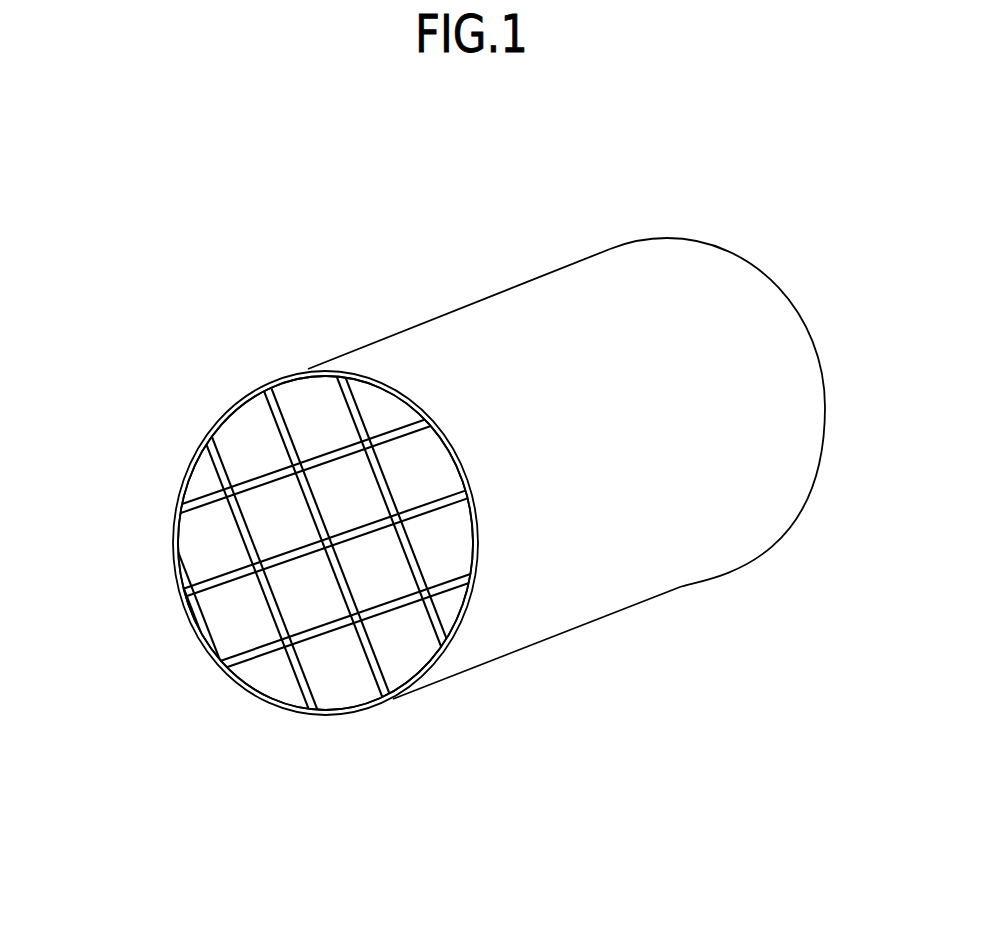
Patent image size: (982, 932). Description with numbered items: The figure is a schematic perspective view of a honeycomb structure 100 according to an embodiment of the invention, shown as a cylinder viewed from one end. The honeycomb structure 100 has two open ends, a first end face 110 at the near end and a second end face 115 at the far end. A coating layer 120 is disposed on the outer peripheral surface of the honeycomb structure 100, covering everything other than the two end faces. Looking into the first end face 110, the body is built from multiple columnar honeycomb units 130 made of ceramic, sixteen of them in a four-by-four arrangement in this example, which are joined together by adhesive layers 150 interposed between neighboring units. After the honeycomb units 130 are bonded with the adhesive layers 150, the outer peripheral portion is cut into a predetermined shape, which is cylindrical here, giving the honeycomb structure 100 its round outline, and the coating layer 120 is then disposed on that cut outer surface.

The honeycomb structure 100 is at (178, 203).
The first end face 110 is at (124, 519).
The second end face 115 is at (804, 287).
The coating layer 120 is at (427, 355).
The honeycomb unit 130 is at (327, 555).
The adhesive layer 150 is at (442, 612).